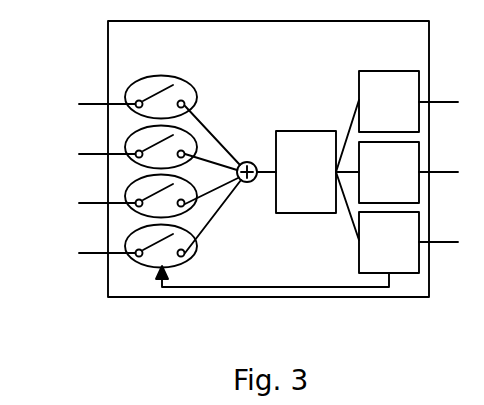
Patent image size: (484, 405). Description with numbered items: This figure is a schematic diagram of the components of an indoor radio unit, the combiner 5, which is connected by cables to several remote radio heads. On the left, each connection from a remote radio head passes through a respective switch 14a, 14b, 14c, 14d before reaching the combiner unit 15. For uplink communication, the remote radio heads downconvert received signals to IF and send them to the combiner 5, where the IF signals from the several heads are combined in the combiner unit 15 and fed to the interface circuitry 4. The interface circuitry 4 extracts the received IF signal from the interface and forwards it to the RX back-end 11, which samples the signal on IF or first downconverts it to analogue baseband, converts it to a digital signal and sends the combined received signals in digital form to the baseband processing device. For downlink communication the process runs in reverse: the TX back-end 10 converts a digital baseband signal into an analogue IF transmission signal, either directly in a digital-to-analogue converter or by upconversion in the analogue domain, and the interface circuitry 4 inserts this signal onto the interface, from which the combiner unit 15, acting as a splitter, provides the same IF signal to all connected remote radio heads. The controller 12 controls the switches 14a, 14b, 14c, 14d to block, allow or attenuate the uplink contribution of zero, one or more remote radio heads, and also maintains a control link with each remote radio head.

The combiner 5 is at (261, 59).
The switch 14a is at (128, 86).
The switch 14b is at (139, 166).
The switch 14c is at (138, 214).
The switch 14d is at (198, 247).
The combiner unit 15 is at (247, 162).
The interface circuitry 4 is at (300, 166).
The TX back-end 10 is at (377, 97).
The RX back-end 11 is at (377, 167).
The controller 12 is at (377, 237).